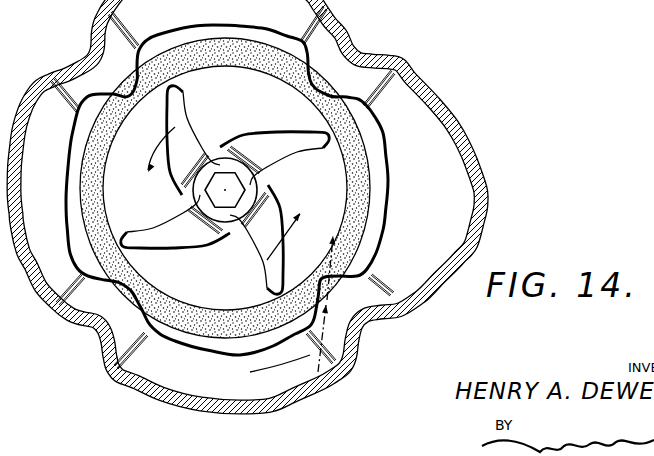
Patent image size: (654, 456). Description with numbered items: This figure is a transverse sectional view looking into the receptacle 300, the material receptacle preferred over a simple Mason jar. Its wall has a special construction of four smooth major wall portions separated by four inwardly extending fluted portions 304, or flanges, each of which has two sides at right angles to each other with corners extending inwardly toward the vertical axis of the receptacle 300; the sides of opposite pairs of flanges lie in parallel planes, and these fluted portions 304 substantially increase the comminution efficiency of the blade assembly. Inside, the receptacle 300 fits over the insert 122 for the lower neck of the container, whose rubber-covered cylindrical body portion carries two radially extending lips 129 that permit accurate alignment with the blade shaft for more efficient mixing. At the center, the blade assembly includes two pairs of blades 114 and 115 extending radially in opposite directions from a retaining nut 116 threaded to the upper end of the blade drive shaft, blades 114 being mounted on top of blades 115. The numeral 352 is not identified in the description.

The receptacle 300 is at (458, 108).
The fluted portions 304 is at (92, 52).
The insert 122 is at (207, 300).
The lips 129 is at (357, 188).
The impeller hub 352 is at (213, 146).
The retaining nut 116 is at (235, 183).
The blades 114 is at (290, 150).
The blades 115 is at (180, 167).